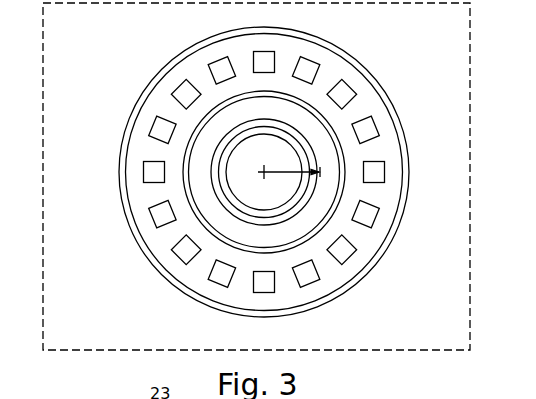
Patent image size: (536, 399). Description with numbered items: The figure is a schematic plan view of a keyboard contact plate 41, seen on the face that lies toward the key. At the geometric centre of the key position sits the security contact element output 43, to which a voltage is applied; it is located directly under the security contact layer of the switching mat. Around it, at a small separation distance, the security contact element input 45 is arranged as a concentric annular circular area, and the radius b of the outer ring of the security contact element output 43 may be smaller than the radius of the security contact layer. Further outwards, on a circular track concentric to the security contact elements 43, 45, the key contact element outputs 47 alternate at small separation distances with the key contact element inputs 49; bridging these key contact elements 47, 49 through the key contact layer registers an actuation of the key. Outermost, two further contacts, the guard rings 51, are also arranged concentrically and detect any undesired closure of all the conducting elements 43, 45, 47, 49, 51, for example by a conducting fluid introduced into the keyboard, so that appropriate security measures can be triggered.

The keyboard contact plate 41 is at (456, 238).
The security contact element output 43 is at (262, 143).
The security contact element input 45 is at (228, 138).
The key contact element output 47 is at (382, 168).
The key contact element input 49 is at (372, 130).
The guard ring 51 is at (182, 162).